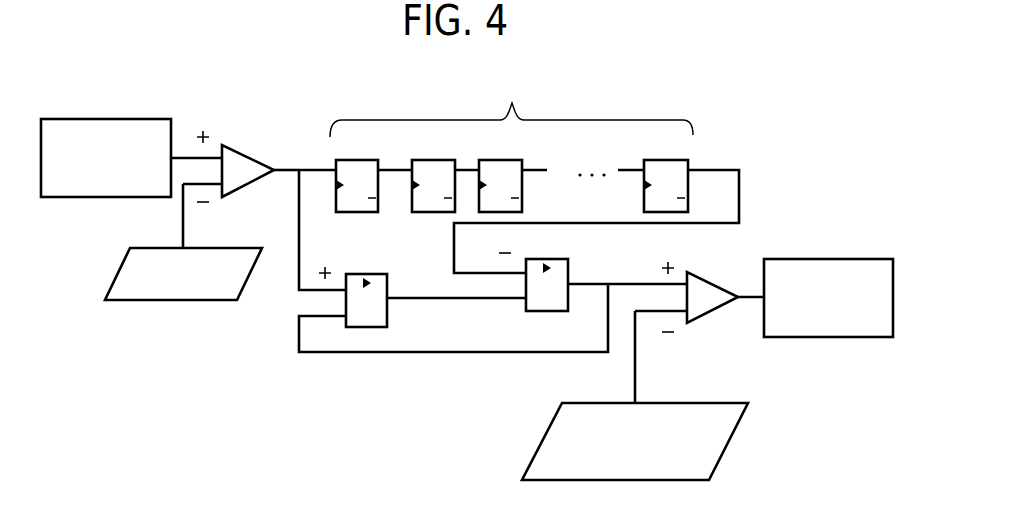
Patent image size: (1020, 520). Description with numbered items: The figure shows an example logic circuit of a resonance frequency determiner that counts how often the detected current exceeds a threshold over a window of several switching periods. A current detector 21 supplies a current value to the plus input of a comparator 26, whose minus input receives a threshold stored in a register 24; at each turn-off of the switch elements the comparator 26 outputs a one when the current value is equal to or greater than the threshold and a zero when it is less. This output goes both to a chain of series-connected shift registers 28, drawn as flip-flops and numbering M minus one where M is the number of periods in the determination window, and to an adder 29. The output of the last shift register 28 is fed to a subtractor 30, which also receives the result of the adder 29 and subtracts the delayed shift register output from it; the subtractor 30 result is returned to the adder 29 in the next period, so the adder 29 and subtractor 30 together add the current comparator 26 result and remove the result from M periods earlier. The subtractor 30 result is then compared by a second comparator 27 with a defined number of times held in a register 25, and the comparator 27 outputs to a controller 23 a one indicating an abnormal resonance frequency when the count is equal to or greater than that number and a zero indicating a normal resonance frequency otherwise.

The current detector 21 is at (127, 119).
The controller 23 is at (800, 259).
The register 24 is at (155, 300).
The register 25 is at (557, 412).
The comparator 26 is at (240, 148).
The comparator 27 is at (715, 312).
The shift register 28 is at (337, 159).
The adder 29 is at (367, 274).
The subtractor 30 is at (568, 262).